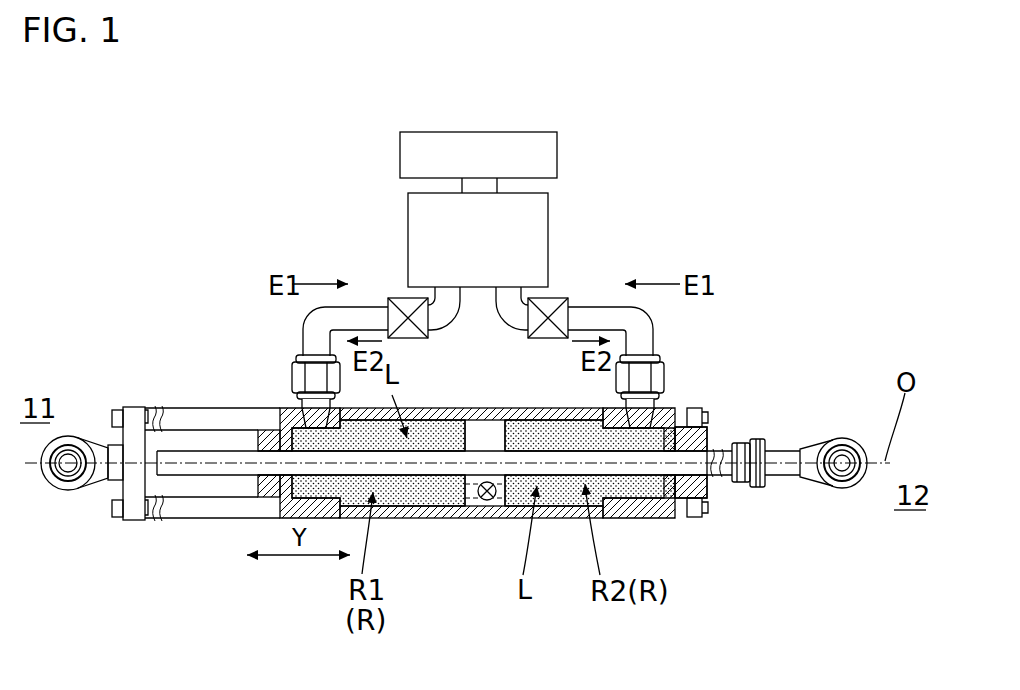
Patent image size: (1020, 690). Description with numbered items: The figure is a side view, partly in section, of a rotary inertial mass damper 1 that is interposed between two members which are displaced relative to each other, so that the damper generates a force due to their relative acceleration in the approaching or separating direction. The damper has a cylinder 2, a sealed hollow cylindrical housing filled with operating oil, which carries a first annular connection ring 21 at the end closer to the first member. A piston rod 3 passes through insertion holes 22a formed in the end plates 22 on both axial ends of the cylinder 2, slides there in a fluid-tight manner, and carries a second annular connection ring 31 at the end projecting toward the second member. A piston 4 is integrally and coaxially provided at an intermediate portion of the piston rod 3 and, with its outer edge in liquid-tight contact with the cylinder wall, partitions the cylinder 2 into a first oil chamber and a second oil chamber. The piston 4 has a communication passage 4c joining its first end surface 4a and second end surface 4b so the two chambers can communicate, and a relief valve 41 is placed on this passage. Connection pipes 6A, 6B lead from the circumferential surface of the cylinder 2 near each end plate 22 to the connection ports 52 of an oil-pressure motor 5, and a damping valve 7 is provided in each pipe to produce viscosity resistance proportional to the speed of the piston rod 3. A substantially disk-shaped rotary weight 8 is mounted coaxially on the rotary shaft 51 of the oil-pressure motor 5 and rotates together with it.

The rotary inertial mass damper 1 is at (624, 211).
The cylinder 2 is at (548, 519).
The piston rod 3 is at (527, 476).
The piston 4 is at (487, 430).
The first end surface 4a is at (445, 420).
The second end surface 4b is at (522, 438).
The communication passage 4c is at (485, 506).
The relief valve 41 is at (470, 520).
The oil-pressure motor 5 is at (408, 222).
The rotary shaft 51 is at (460, 186).
The connection port 52 is at (428, 303).
The connection pipe 6A is at (303, 339).
The connection pipe 6B is at (653, 323).
The damping valve 7 is at (388, 298).
The rotary weight 8 is at (437, 131).
The first annular connection ring 21 is at (63, 436).
The end plate 22 is at (268, 443).
The insertion hole 22a is at (276, 462).
The second annular connection ring 31 is at (860, 489).